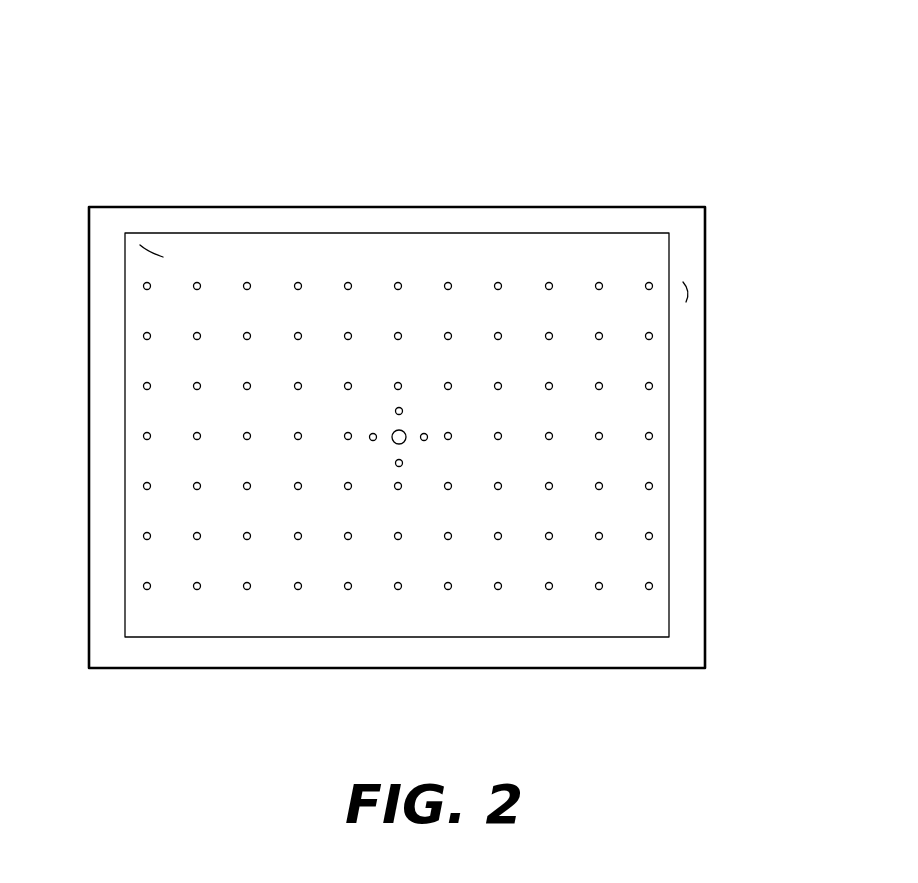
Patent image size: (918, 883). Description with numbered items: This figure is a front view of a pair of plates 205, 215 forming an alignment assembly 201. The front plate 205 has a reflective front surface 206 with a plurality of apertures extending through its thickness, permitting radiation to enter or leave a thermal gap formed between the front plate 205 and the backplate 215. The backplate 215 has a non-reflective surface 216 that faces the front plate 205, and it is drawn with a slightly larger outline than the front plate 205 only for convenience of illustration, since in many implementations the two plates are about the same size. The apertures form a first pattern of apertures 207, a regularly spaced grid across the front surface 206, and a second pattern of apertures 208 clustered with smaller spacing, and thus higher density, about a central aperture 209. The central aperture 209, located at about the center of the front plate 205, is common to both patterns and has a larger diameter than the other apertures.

The touch panel assembly 201 is at (188, 73).
The front plate 205 is at (478, 275).
The reflective front surface 206 is at (147, 248).
The first pattern of apertures 207 is at (654, 384).
The second pattern of apertures 208 is at (370, 435).
The central aperture 209 is at (395, 430).
The backplate 215 is at (667, 207).
The non-reflective surface 216 is at (690, 289).